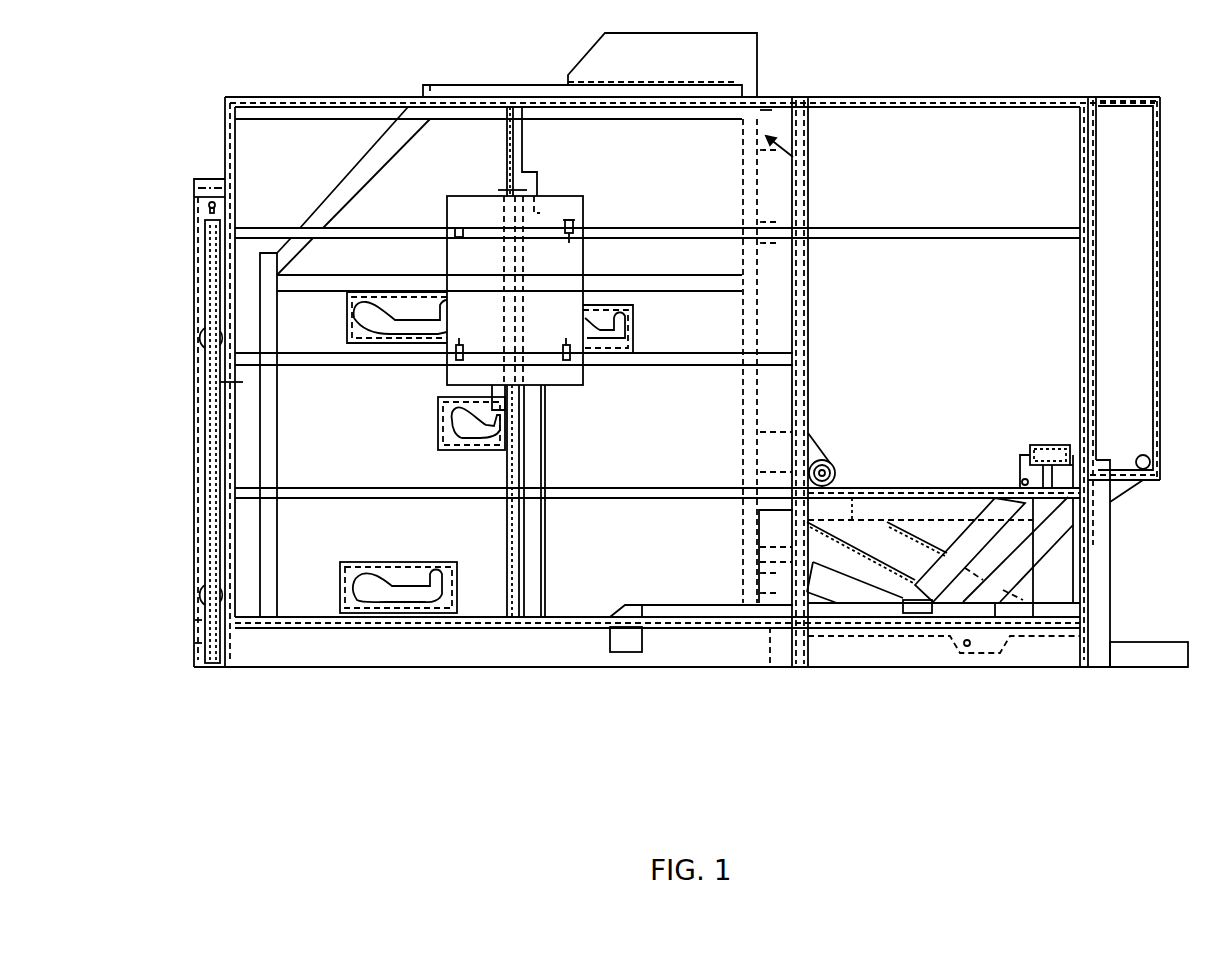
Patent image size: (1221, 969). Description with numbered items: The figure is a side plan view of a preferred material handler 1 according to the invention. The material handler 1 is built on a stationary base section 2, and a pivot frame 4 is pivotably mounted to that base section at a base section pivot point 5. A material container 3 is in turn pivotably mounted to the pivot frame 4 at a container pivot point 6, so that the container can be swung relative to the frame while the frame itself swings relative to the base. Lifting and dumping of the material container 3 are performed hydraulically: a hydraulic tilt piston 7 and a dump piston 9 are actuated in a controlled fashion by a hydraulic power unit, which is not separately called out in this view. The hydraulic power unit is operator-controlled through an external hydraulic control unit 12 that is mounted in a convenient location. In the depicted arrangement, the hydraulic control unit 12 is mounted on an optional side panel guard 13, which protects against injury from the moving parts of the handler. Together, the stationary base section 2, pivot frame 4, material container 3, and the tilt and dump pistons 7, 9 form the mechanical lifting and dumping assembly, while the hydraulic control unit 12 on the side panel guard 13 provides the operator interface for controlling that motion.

The material handler 1 is at (834, 55).
The stationary base section 2 is at (457, 657).
The material container 3 is at (354, 176).
The pivot frame 4 is at (885, 563).
The base section pivot point 5 is at (1150, 462).
The container pivot point 6 is at (826, 462).
The hydraulic tilt piston 7 is at (818, 578).
The dump piston 9 is at (992, 520).
The hydraulic control unit 12 is at (446, 265).
The side panel guard 13 is at (1027, 102).